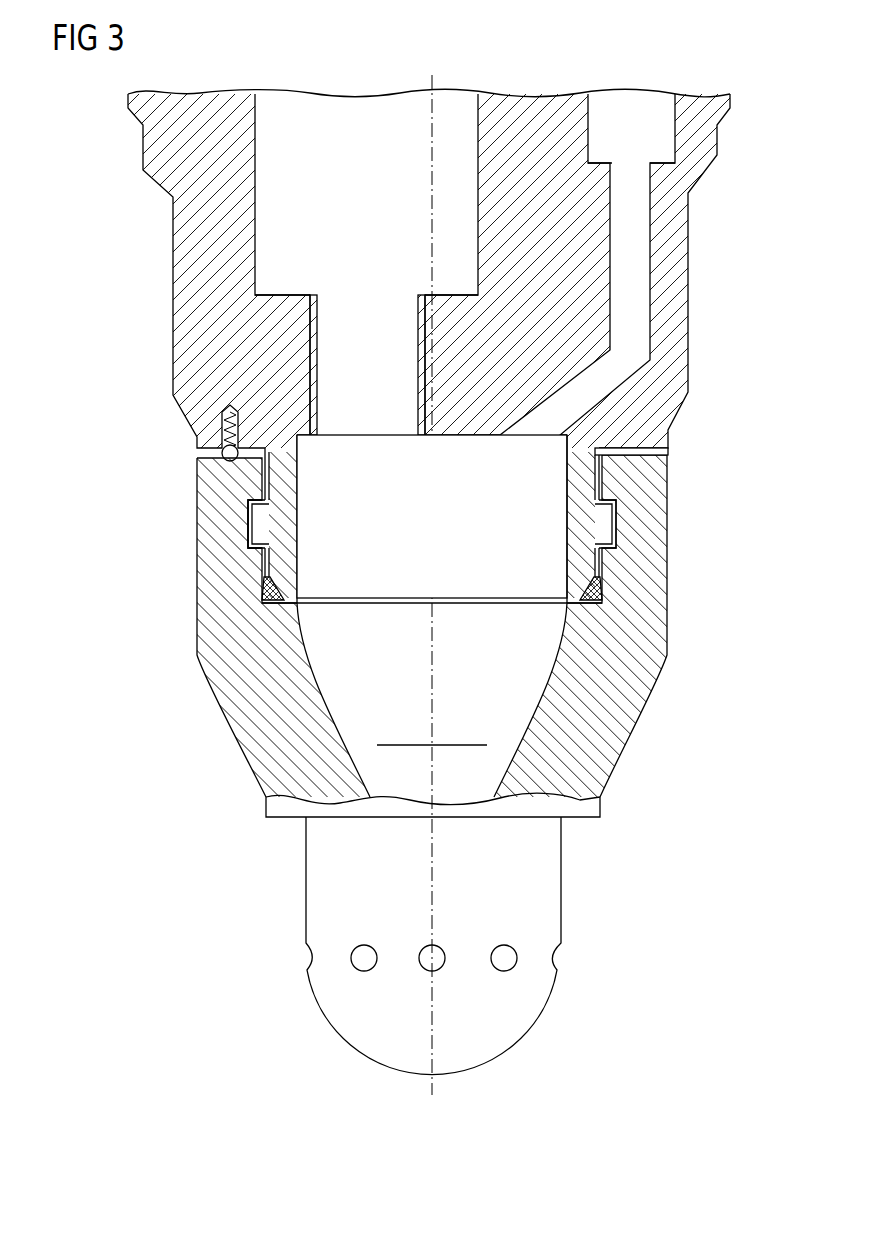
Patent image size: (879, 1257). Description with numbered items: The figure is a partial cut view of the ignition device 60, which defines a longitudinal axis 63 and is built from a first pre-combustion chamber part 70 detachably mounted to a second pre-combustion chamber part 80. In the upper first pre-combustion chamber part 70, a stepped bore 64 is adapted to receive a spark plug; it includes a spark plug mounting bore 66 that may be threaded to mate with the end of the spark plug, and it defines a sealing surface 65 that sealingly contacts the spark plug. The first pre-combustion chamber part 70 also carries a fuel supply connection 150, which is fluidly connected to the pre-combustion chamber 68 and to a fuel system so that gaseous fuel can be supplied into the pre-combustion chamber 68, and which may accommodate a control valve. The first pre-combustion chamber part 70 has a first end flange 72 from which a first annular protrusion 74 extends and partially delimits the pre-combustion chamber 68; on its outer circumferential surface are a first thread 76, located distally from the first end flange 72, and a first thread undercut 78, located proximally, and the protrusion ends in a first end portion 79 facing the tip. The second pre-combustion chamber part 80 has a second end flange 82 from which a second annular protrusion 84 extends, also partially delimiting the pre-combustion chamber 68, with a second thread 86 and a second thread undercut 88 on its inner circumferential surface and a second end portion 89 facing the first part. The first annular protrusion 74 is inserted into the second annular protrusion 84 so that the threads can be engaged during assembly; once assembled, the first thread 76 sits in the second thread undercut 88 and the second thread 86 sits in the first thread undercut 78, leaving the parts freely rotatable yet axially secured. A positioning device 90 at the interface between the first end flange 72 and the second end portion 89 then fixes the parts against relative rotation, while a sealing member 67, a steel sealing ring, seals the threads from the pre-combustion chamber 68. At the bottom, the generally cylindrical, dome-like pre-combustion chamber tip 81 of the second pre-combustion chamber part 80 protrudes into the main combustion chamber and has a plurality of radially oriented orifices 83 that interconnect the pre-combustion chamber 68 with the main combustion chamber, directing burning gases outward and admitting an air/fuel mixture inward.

The ignition device 60 is at (110, 236).
The longitudinal axis 63 is at (441, 1085).
The stepped bore 64 is at (262, 165).
The sealing surface 65 is at (303, 292).
The spark plug mounting bore 66 is at (322, 368).
The sealing member 67 is at (298, 583).
The pre-combustion chamber 68 is at (548, 663).
The first pre-combustion chamber part 70 is at (690, 268).
The first end flange 72 is at (662, 452).
The first annular protrusion 74 is at (280, 530).
The first thread 76 is at (258, 520).
The first thread undercut 78 is at (272, 482).
The first end portion 79 is at (297, 597).
The second pre-combustion chamber part 80 is at (617, 737).
The pre-combustion chamber tip 81 is at (588, 962).
The second end flange 82 is at (582, 592).
The orifices 83 is at (370, 967).
The second annular protrusion 84 is at (655, 540).
The second thread 86 is at (582, 470).
The second thread undercut 88 is at (252, 540).
The second end portion 89 is at (655, 465).
The positioning device 90 is at (206, 432).
The fuel supply connection 150 is at (640, 310).